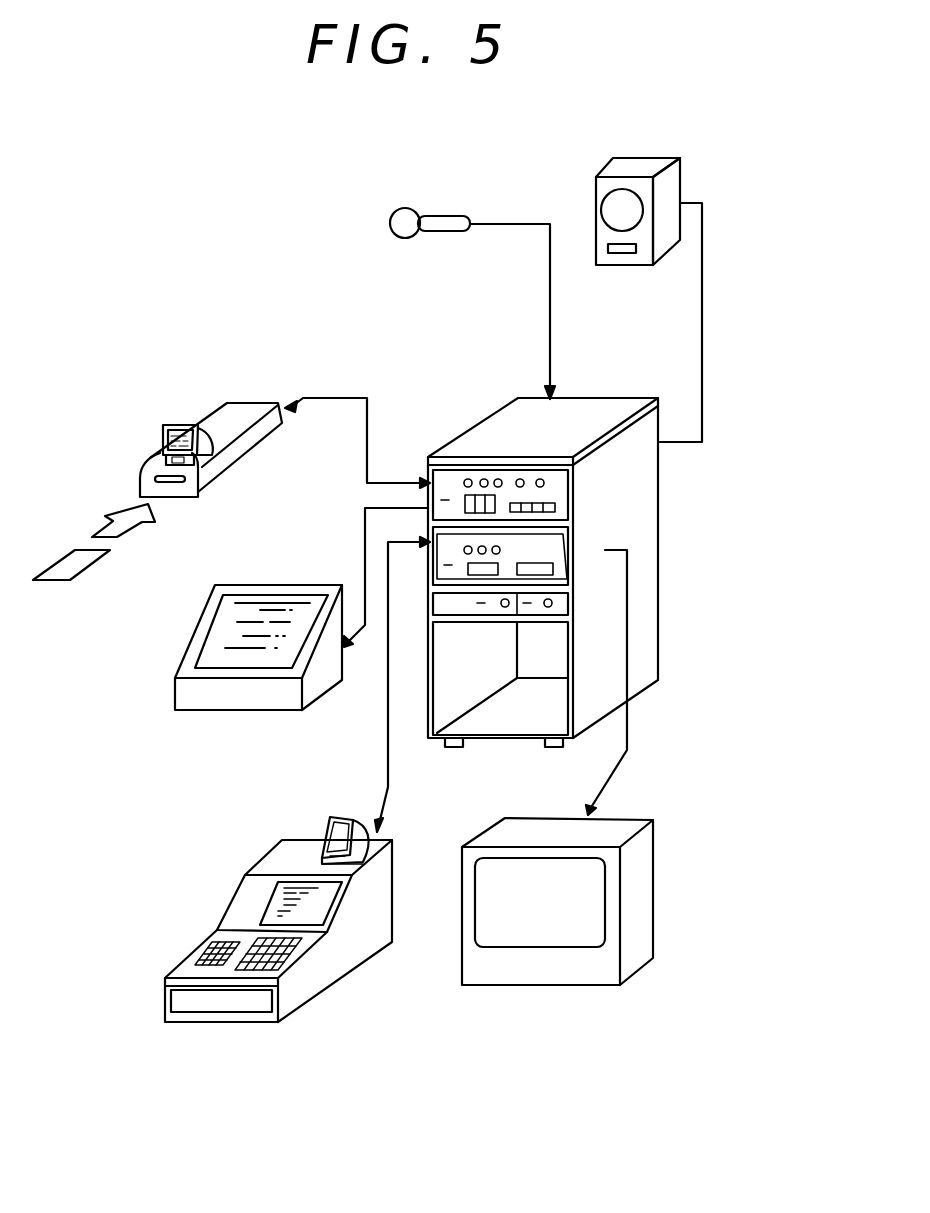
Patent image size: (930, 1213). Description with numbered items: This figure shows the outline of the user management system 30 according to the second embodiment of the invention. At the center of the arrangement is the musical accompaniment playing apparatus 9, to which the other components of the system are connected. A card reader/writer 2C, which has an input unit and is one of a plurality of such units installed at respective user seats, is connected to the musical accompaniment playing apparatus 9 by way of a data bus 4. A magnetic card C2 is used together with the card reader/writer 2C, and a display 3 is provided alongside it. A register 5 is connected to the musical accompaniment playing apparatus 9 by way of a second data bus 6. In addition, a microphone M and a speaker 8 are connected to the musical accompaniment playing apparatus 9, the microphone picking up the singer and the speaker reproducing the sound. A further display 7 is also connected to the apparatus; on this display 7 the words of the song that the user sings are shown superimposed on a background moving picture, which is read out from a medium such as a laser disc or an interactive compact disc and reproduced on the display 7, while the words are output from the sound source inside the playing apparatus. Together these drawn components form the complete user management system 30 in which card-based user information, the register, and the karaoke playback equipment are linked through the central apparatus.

The microphone M is at (440, 216).
The speaker 8 is at (612, 166).
The musical accompaniment playing apparatus 9 is at (482, 421).
The data bus 4 is at (343, 400).
The user management system 30 is at (202, 360).
The card reader/writer 2C is at (240, 467).
The magnetic card C2 is at (60, 584).
The display 3 is at (255, 710).
The data bus 6 is at (395, 750).
The register 5 is at (330, 958).
The display 7 is at (538, 985).